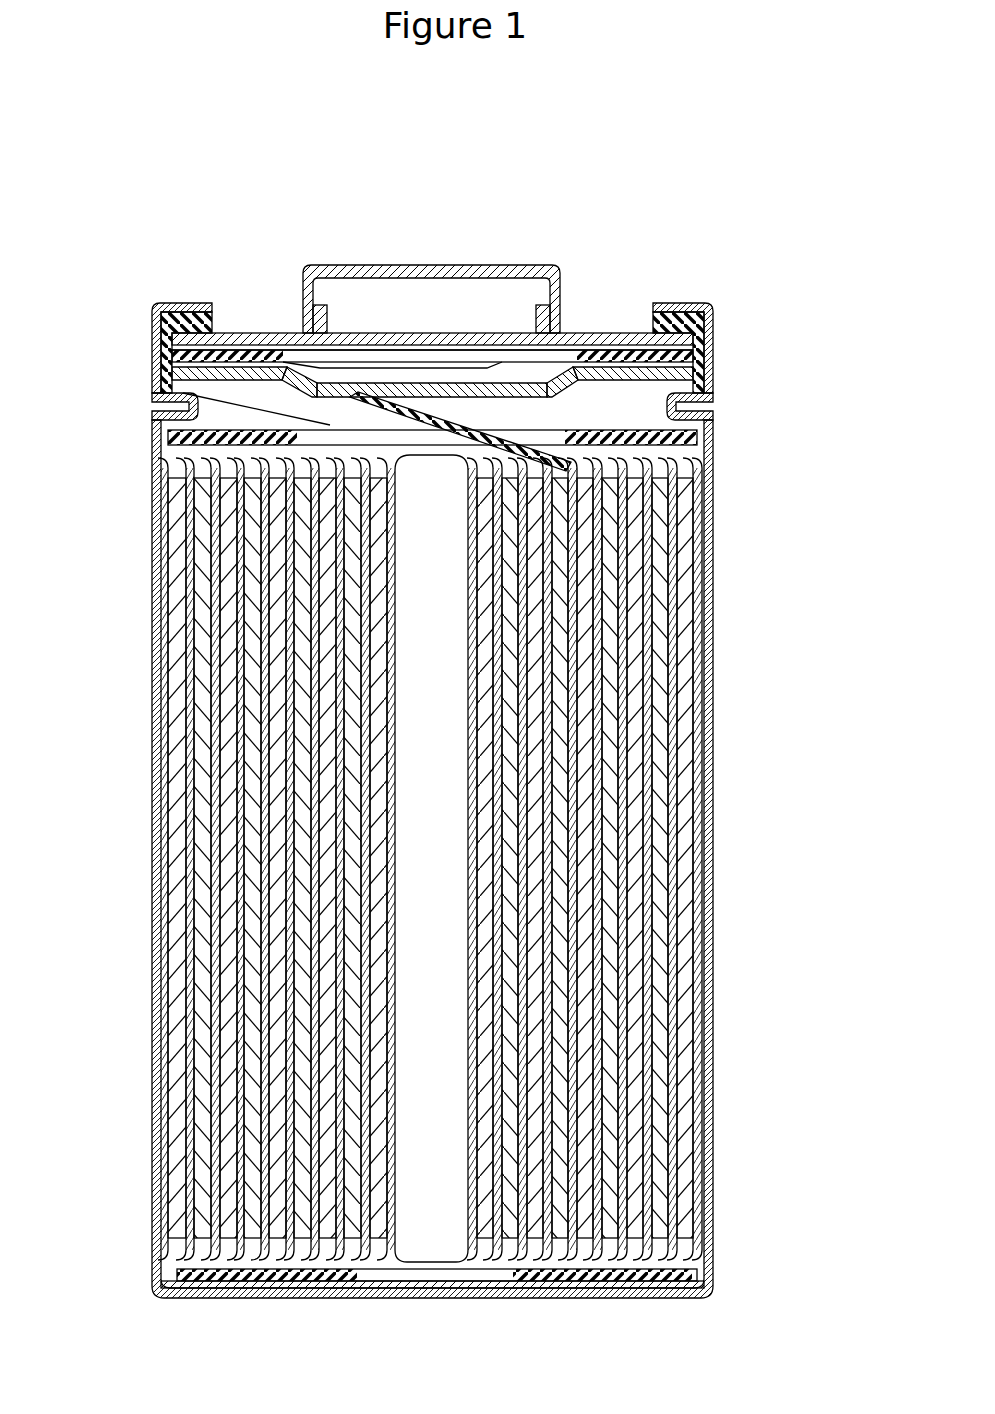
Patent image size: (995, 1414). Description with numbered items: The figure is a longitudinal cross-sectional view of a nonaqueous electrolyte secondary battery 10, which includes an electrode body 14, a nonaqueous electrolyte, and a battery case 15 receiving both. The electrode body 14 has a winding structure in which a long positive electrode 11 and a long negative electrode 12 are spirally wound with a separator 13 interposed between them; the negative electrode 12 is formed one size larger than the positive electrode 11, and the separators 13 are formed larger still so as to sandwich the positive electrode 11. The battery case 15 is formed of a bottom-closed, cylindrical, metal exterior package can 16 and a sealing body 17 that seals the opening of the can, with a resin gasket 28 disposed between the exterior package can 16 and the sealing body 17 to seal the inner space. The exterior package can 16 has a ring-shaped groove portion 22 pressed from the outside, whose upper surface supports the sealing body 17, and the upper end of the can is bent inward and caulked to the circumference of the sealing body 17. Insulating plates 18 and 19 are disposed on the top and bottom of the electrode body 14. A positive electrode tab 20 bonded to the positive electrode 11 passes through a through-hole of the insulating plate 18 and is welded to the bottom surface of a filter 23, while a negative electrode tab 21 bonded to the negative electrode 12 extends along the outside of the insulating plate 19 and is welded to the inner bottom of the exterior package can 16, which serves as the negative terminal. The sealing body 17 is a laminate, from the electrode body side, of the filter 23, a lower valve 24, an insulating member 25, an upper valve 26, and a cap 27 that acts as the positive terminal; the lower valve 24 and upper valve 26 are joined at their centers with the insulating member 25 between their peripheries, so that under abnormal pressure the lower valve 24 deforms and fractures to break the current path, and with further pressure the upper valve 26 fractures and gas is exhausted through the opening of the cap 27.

The nonaqueous electrolyte secondary battery 10 is at (730, 118).
The positive electrode 11 is at (704, 935).
The negative electrode 12 is at (700, 970).
The separator 13 is at (706, 1005).
The electrode body 14 is at (815, 920).
The battery case 15 is at (583, 203).
The exterior package can 16 is at (675, 303).
The sealing body 17 is at (595, 330).
The insulating plate 18 is at (713, 438).
The insulating plate 19 is at (713, 1283).
The positive electrode tab 20 is at (165, 386).
The negative electrode tab 21 is at (167, 1272).
The groove portion 22 is at (165, 408).
The filter 23 is at (432, 395).
The lower valve 24 is at (318, 365).
The insulating member 25 is at (248, 340).
The upper valve 26 is at (345, 365).
The cap 27 is at (512, 268).
The gasket 28 is at (713, 330).